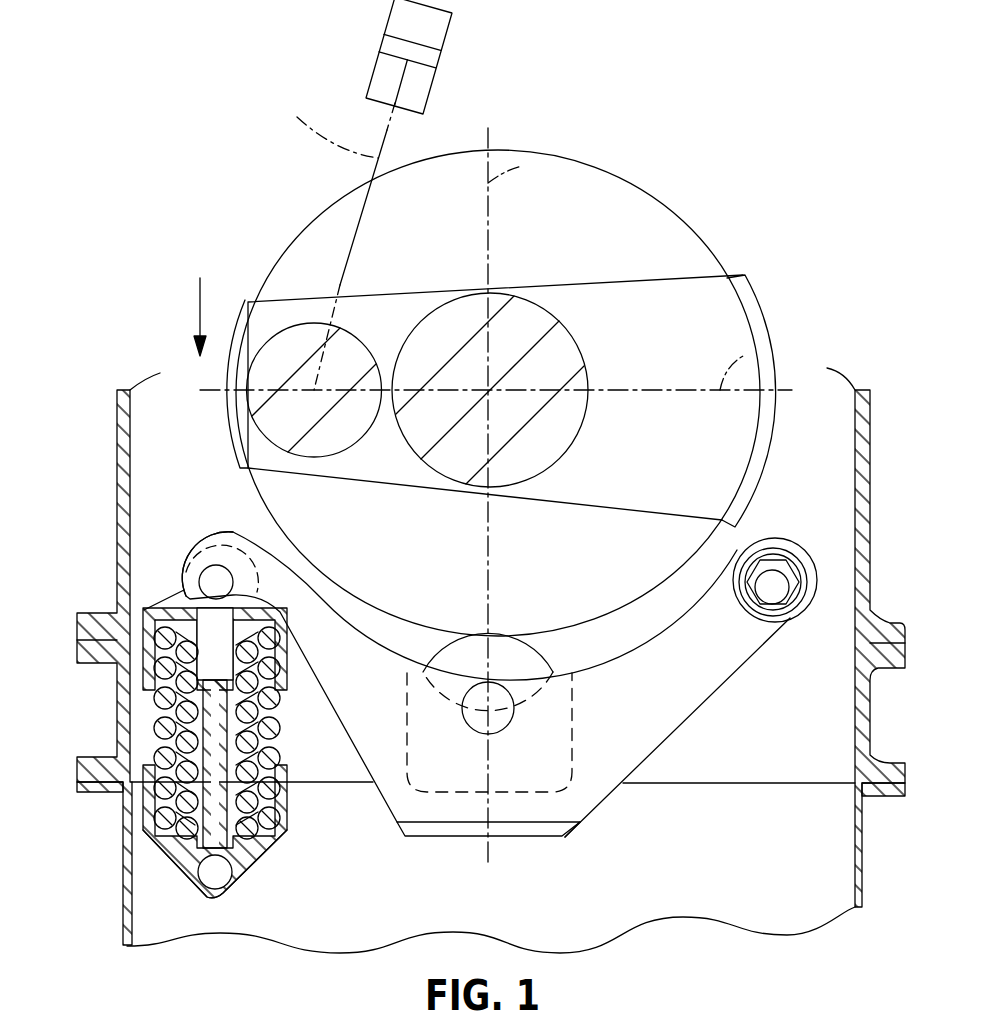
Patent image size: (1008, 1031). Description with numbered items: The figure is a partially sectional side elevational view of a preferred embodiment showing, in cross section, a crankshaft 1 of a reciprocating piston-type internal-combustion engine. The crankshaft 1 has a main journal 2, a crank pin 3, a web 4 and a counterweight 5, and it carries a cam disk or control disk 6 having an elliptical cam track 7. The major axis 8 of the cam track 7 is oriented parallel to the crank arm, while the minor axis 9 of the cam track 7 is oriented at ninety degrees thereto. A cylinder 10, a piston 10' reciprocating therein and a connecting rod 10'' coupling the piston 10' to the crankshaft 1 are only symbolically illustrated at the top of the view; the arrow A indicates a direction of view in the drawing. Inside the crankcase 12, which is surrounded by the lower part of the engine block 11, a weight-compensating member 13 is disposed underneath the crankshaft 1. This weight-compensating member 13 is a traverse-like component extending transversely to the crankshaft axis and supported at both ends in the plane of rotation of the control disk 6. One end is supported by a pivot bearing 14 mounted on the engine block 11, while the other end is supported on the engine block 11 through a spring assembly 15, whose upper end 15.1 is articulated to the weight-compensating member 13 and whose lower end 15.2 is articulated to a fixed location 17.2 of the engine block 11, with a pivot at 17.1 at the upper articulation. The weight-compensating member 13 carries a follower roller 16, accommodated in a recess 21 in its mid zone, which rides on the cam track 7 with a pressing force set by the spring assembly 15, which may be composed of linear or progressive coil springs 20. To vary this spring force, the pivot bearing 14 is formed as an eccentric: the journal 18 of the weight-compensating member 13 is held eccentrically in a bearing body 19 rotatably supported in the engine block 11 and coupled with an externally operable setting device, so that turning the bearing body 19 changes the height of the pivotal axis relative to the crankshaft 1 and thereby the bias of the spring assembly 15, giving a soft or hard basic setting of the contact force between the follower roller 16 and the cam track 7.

The direction arrow A is at (173, 317).
The crankshaft 1 is at (735, 240).
The main journal 2 is at (515, 320).
The crank pin 3 is at (316, 328).
The web 4 is at (400, 300).
The counterweight 5 is at (735, 325).
The cam disk 6 is at (640, 205).
The cam track 7 is at (617, 170).
The major axis 8 is at (750, 356).
The minor axis 9 is at (522, 166).
The cylinder 10 is at (386, 57).
The piston 10' is at (357, 195).
The connecting rod 10'' is at (330, 120).
The engine block 11 is at (866, 425).
The crankcase 12 is at (845, 835).
The weight-compensating member 13 is at (690, 700).
The pivot bearing 14 is at (797, 520).
The spring assembly 15 is at (105, 830).
The upper end 15.1 is at (160, 587).
The lower end 15.2 is at (166, 905).
The follower roller 16 is at (530, 658).
The upper pivot pin 17.1 is at (214, 572).
The fixed location 17.2 is at (218, 872).
The journal 18 is at (795, 570).
The bearing body 19 is at (780, 600).
The coil springs 20 is at (165, 705).
The recess 21 is at (600, 830).